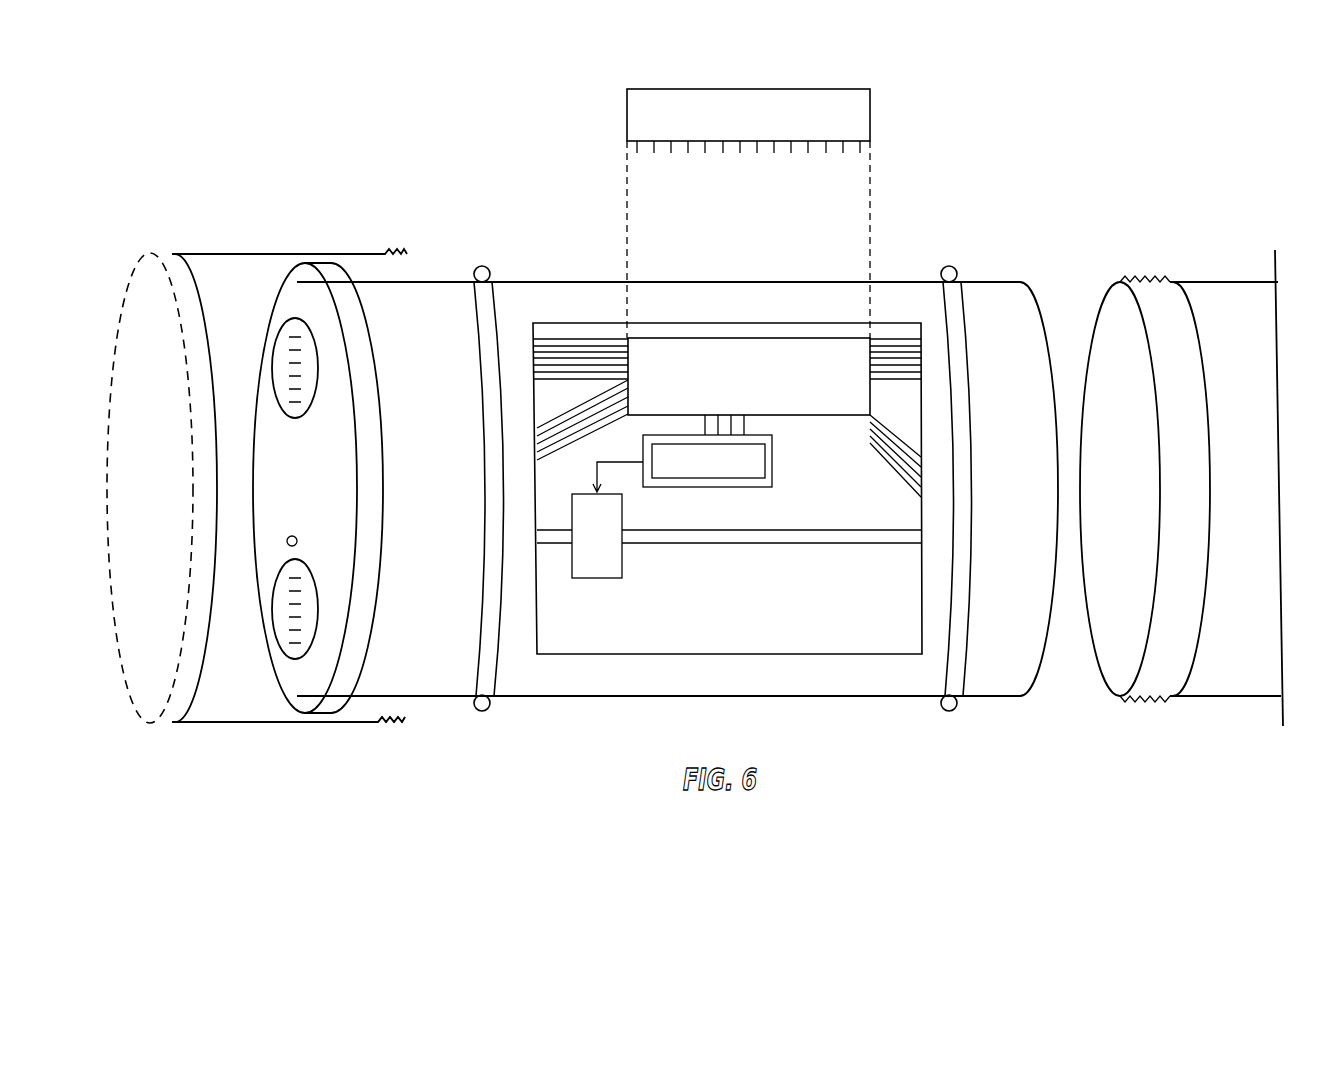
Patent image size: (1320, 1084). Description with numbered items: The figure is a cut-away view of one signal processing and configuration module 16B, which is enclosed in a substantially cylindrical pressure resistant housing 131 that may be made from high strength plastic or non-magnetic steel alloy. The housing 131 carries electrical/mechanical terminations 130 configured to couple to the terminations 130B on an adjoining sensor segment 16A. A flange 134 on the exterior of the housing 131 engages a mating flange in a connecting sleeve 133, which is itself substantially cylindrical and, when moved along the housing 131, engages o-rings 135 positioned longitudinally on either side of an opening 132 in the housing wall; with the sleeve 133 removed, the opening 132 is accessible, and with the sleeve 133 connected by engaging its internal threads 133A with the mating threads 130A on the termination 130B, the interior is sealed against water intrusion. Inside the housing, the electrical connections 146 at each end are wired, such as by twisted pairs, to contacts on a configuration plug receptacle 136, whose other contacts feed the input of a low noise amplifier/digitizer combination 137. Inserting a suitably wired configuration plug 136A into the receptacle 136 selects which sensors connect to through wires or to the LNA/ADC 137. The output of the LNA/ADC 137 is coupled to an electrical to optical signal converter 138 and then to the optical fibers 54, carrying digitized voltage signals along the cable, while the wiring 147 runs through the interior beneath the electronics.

The sensor segment 16A is at (1210, 728).
The signal processing and configuration module 16B is at (990, 144).
The optical fibers 54 is at (800, 625).
The electrical/mechanical terminations 130 is at (273, 502).
The mating threads 130A is at (1142, 280).
The terminations on sensor segment 130B is at (1175, 328).
The pressure resistant housing 131 is at (993, 281).
The opening 132 is at (712, 330).
The connecting sleeve 133 is at (298, 252).
The internal threads 133A is at (383, 719).
The flange 134 is at (338, 685).
The o-rings 135 is at (479, 266).
The configuration plug receptacle 136 is at (842, 362).
The configuration plug 136A is at (855, 100).
The low noise amplifier/digitizer (LNA/ADC) combination 137 is at (773, 462).
The electrical to optical signal converter (EOC) 138 is at (597, 579).
The electrical connections 146 is at (275, 348).
The conductors 147 is at (286, 541).